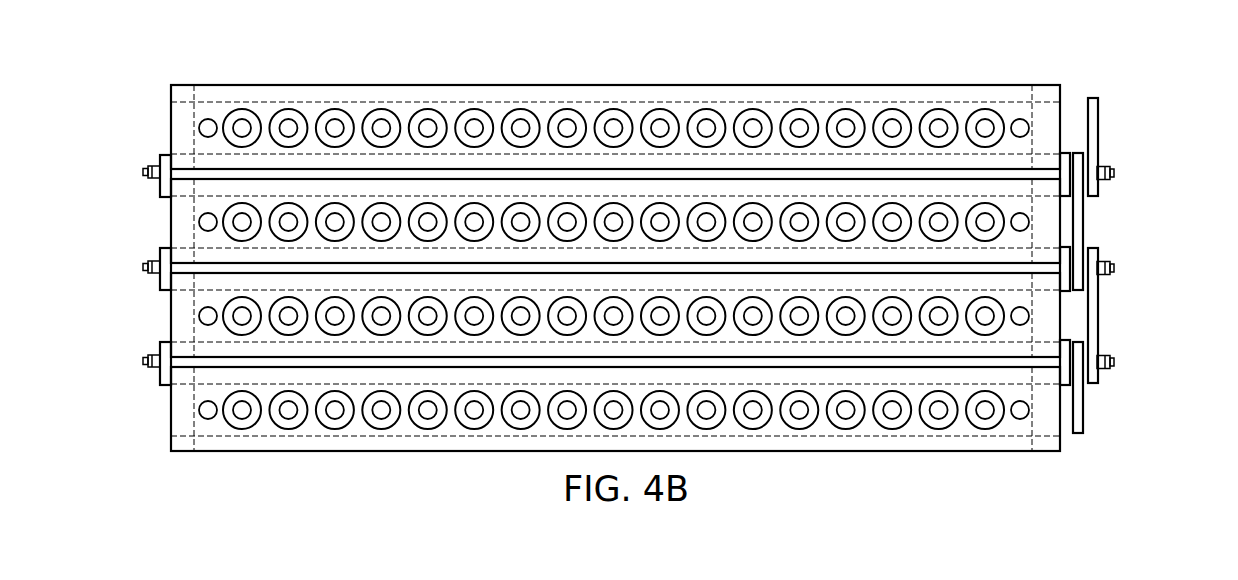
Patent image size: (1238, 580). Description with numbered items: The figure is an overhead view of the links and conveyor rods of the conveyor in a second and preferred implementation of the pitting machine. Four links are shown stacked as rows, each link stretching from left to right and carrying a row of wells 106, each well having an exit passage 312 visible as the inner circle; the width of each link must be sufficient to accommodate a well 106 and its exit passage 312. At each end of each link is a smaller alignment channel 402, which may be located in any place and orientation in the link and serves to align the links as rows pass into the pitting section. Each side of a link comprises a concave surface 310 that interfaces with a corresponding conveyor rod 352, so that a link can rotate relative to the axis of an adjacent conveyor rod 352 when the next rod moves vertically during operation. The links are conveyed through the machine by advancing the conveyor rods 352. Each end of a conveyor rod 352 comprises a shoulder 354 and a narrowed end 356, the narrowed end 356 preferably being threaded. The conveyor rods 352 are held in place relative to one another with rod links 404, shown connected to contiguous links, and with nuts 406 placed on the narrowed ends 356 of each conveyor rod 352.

The concave surface 310 is at (455, 186).
The well 106 is at (985, 118).
The exit passage 312 is at (240, 122).
The alignment channel 402 is at (208, 119).
The conveyor rod 352 is at (165, 152).
The shoulder 354 is at (161, 282).
The narrowed end 356 is at (147, 174).
The nut 406 is at (1100, 165).
The rod link 404 is at (1084, 223).